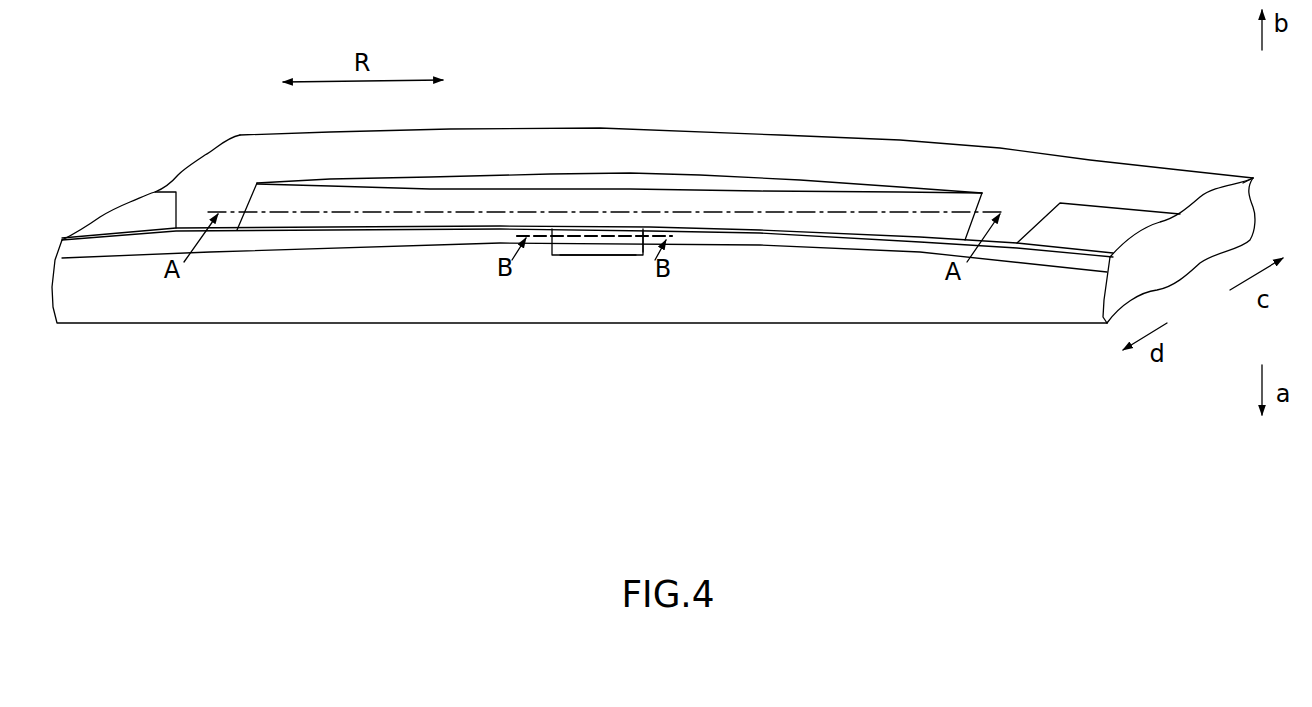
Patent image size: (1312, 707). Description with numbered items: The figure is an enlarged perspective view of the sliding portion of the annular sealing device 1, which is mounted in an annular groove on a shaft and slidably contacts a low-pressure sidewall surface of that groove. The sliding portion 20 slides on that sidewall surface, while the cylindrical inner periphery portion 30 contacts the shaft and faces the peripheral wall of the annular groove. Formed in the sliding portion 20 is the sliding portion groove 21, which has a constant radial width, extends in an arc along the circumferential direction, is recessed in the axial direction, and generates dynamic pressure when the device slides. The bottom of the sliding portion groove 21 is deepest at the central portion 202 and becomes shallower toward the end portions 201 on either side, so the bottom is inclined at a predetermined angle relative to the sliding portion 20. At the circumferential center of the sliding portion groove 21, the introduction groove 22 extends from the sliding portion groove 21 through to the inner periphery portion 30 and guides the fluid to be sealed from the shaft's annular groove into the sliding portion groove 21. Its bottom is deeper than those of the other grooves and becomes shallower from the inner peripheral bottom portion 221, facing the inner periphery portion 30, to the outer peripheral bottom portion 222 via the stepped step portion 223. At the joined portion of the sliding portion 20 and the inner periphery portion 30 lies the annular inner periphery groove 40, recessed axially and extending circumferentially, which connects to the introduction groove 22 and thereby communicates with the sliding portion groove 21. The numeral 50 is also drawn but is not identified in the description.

The sealing device 1 is at (948, 105).
The sliding portion 20 is at (802, 165).
The sliding portion groove 21 is at (609, 135).
The end portions 201 is at (257, 183).
The central portion 202 is at (570, 208).
The introduction groove 22 is at (612, 323).
The inner peripheral bottom portion 221 is at (597, 254).
The outer peripheral bottom portion 222 is at (648, 230).
The step portion 223 is at (580, 236).
The inner periphery portion 30 is at (888, 313).
The inner periphery groove 40 is at (1003, 248).
The cover member 50 is at (1260, 195).